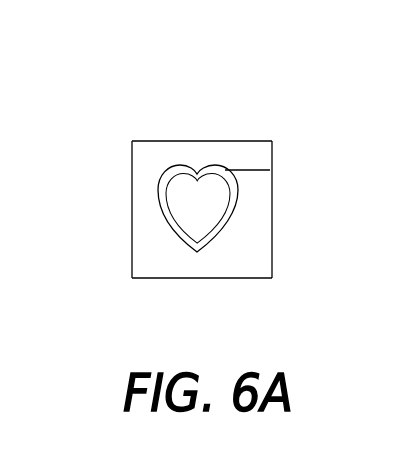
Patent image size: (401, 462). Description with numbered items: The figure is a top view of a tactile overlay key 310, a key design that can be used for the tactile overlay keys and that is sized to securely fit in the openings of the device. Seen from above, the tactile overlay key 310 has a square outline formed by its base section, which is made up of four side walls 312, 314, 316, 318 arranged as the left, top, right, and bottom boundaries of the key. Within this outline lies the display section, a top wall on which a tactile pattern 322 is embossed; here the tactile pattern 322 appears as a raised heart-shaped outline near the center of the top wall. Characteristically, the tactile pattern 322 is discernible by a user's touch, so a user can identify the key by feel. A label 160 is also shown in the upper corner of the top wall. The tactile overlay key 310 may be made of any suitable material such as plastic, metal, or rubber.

The tactile overlay key 310 is at (259, 75).
The side wall 312 is at (131, 217).
The side wall 314 is at (190, 140).
The side wall 316 is at (272, 207).
The side wall 318 is at (202, 279).
The tactile pattern 322 is at (164, 192).
The count indicator 160 is at (247, 158).